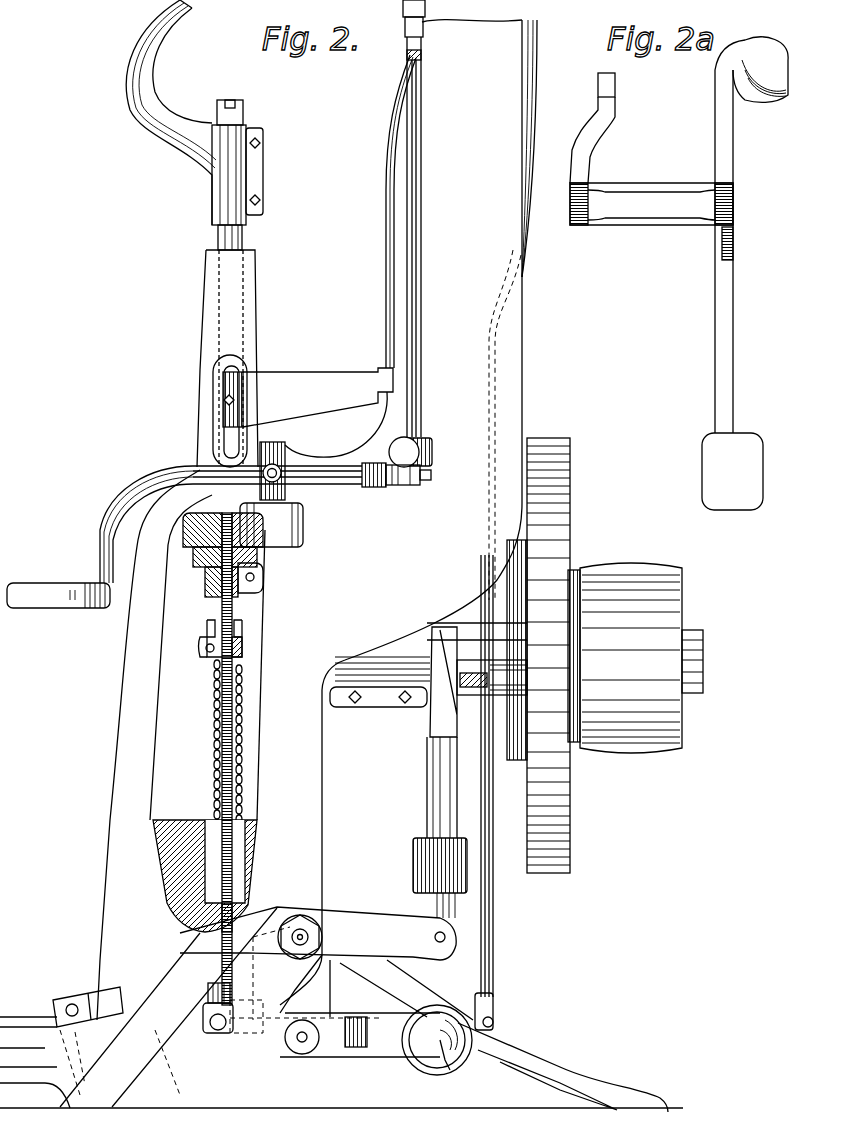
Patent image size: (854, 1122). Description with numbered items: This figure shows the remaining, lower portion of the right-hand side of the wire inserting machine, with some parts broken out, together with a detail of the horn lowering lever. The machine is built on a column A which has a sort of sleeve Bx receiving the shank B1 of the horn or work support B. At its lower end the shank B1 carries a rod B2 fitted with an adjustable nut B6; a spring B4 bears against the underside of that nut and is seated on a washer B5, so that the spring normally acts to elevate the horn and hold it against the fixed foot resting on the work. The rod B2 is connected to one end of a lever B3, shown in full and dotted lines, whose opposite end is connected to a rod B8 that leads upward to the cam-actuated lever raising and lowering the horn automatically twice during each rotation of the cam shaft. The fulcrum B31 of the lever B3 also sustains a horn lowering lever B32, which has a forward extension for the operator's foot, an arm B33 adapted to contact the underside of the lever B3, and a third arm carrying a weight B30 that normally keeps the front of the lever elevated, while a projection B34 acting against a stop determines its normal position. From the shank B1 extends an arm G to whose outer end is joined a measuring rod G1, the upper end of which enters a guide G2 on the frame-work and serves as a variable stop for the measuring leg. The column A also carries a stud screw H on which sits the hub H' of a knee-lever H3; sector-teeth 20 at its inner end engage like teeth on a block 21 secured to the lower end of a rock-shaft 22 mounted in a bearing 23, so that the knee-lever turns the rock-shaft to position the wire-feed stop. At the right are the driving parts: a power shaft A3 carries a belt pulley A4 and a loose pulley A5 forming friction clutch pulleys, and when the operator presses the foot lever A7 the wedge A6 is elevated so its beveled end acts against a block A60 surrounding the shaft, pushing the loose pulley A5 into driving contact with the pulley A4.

In FIG. 2, the horn B is at (137, 100).
In FIG. 2, the shank B1 is at (223, 233).
In FIG. 2, the sleeve Bx is at (250, 315).
In FIG. 2, the rod B2 is at (232, 605).
In FIG. 2, the lever B3 is at (205, 1020).
In FIG. 2, the spring B4 is at (237, 688).
In FIG. 2, the washer B5 is at (205, 905).
In FIG. 2, the adjustable nut B6 is at (242, 650).
In FIG. 2, the rod B8 is at (492, 925).
In FIG. 2, the weight B30 is at (445, 1070).
In FIG. 2A, the weight B30 is at (768, 45).
In FIG. 2, the fulcrum B31 is at (300, 1060).
In FIG. 2, the horn lowering lever B32 is at (55, 1015).
In FIG. 2A, the horn lowering lever B32 is at (718, 148).
In FIG. 2, the arm B33 is at (420, 1068).
In FIG. 2A, the arm B33 is at (610, 85).
In FIG. 2, the projection B34 is at (300, 915).
In FIG. 2A, the projection B34 is at (722, 250).
In FIG. 2, the arm G is at (313, 375).
In FIG. 2, the measuring rod G1 is at (388, 305).
In FIG. 2, the guide G2 is at (405, 25).
In FIG. 2, the stud screw H is at (277, 485).
In FIG. 2, the hub H' is at (336, 435).
In FIG. 2, the knee-lever H3 is at (150, 476).
In FIG. 2, the sector-teeth 20 is at (368, 486).
In FIG. 2, the block 21 is at (405, 486).
In FIG. 2, the rock-shaft 22 is at (417, 385).
In FIG. 2, the bearing 23 is at (425, 446).
In FIG. 2, the column A is at (408, 512).
In FIG. 2, the power shaft A3 is at (480, 668).
In FIG. 2, the belt pulley A4 is at (632, 563).
In FIG. 2, the loose pulley A5 is at (553, 437).
In FIG. 2, the wedge A6 is at (430, 715).
In FIG. 2, the block A60 is at (450, 627).
In FIG. 2, the foot lever A7 is at (22, 1078).